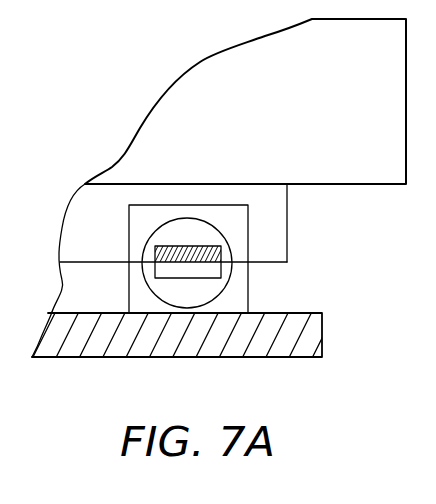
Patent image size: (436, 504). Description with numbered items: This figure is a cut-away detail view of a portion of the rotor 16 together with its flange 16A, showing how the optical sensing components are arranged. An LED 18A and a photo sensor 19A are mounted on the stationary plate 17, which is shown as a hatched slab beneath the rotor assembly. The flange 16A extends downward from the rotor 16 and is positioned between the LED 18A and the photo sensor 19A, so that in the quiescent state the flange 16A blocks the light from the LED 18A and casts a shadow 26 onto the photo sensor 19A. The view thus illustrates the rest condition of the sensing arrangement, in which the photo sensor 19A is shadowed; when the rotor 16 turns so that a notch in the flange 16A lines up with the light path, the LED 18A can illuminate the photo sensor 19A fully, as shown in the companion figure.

The rotor 16 is at (405, 165).
The flange 16A is at (287, 230).
The stationary plate 17 is at (327, 335).
The LED 18A is at (229, 291).
The photo sensor 19A is at (248, 277).
The shadow 26 is at (185, 246).